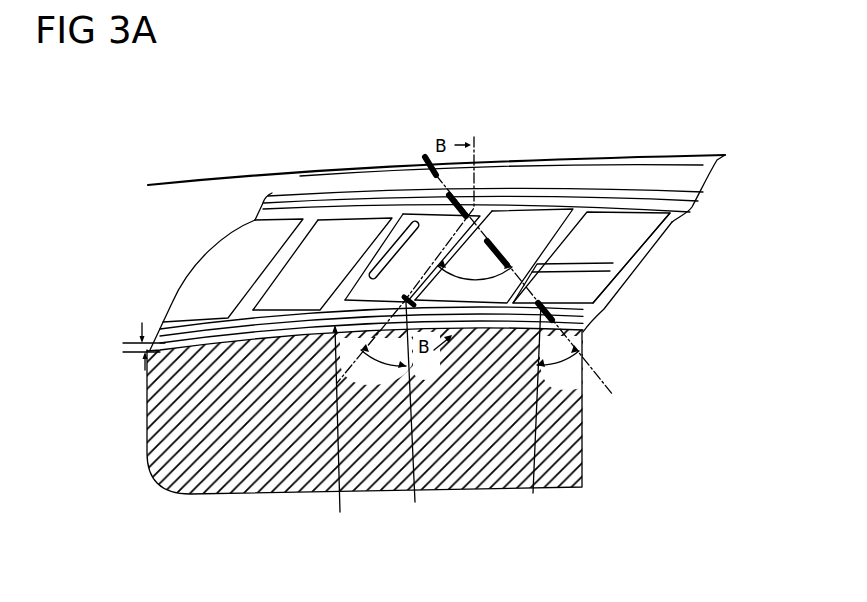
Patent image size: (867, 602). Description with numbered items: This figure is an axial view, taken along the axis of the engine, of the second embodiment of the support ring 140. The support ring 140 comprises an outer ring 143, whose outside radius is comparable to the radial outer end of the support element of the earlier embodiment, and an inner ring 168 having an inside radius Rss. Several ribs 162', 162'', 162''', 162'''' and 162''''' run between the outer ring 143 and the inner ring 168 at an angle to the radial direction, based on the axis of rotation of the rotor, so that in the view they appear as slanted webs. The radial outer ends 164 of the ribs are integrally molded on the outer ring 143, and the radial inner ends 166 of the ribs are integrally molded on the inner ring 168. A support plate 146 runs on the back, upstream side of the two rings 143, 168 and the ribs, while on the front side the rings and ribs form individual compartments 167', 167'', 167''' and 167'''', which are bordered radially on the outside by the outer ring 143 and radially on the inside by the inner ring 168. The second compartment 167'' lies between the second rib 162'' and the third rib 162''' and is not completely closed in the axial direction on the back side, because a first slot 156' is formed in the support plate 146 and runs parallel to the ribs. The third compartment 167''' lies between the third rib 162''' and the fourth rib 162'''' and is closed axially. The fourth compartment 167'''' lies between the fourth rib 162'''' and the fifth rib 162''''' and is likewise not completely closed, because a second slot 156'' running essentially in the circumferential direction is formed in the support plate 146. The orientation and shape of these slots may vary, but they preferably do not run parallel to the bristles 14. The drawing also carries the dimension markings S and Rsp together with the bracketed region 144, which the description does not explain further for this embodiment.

The support ring 140 is at (584, 98).
The outer ring 143 is at (493, 173).
The platform 144 is at (118, 187).
The support plate 146 is at (186, 282).
The bristles 14 is at (424, 158).
The first slot 156' is at (381, 266).
The second slot 156'' is at (591, 257).
The first rib 162' is at (270, 265).
The second rib 162'' is at (351, 257).
The third rib 162''' is at (486, 255).
The fourth rib 162'''' is at (563, 283).
The fifth rib 162''''' is at (658, 258).
The radial outer ends 164 is at (388, 217).
The radial inner ends 166 is at (315, 310).
The first compartment 167' is at (476, 163).
The second compartment 167'' is at (412, 217).
The third compartment 167''' is at (532, 202).
The fourth compartment 167'''' is at (665, 213).
The inner ring 168 is at (152, 377).
The gap S is at (144, 332).
The pressure side radius Rsp is at (347, 442).
The inside radius Rss is at (531, 423).